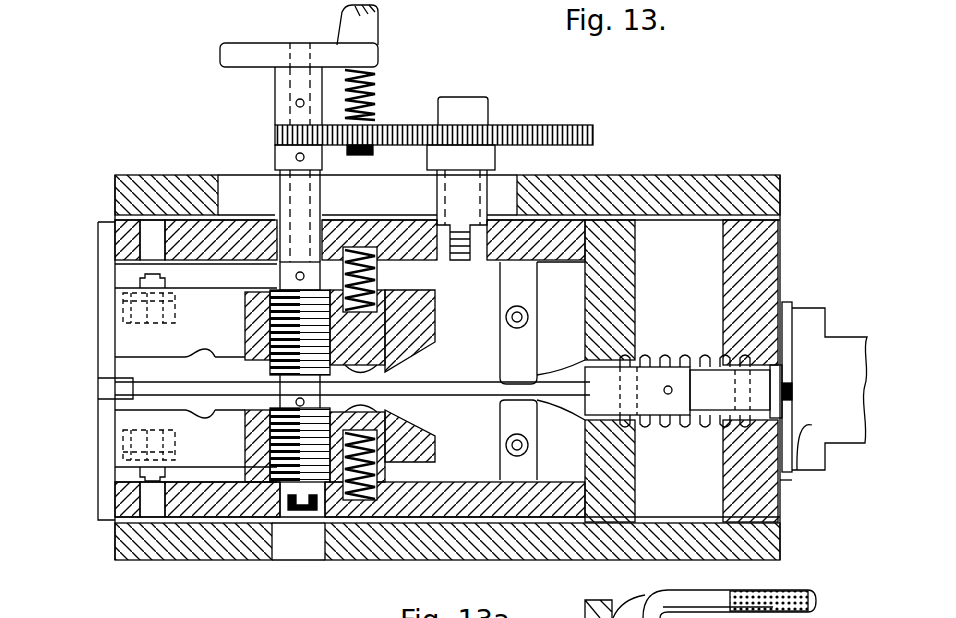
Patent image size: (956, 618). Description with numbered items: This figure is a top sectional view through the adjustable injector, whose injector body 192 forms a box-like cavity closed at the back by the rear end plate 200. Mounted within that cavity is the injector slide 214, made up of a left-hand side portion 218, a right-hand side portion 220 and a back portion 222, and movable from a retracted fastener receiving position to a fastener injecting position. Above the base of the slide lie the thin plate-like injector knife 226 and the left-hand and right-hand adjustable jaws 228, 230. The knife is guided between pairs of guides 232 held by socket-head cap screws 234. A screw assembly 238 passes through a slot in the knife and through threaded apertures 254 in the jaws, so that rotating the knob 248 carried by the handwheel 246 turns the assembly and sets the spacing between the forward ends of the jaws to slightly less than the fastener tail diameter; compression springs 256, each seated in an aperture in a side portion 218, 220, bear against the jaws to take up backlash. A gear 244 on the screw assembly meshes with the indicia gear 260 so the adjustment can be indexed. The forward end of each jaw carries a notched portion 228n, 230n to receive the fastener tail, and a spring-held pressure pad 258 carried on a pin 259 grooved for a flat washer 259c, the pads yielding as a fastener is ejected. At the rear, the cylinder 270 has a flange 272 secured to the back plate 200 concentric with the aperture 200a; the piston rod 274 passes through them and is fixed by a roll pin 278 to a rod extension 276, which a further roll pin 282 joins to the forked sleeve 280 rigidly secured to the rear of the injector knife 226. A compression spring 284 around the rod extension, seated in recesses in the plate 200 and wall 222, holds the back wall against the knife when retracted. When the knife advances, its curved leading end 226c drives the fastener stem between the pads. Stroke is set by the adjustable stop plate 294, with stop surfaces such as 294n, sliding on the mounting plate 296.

In FIG. 13, the injector body 192 is at (126, 576).
In FIG. 13, the rear end plate 200 is at (780, 258).
In FIG. 13, the aperture 200a is at (792, 478).
In FIG. 13, the injector slide 214 is at (678, 245).
In FIG. 13, the left-hand side portion 218 is at (568, 192).
In FIG. 13, the right-hand side portion 220 is at (411, 520).
In FIG. 13, the back portion 222 is at (625, 275).
In FIG. 13, the injector knife 226 is at (480, 394).
In FIG. 13, the curved leading end 226c is at (236, 392).
In FIG. 13, the left-hand adjustable jaw 228 is at (237, 292).
In FIG. 13, the notched portion 228n is at (193, 355).
In FIG. 13, the right-hand adjustable jaw 230 is at (118, 440).
In FIG. 13, the notched portion 230n is at (172, 416).
In FIG. 13, the guides 232 is at (418, 350).
In FIG. 13, the socket-head cap screws 234 is at (505, 316).
In FIG. 13, the screw assembly 238 is at (296, 560).
In FIG. 13, the gear 244 is at (275, 133).
In FIG. 13, the handwheel 246 is at (378, 55).
In FIG. 13, the knob 248 is at (383, 18).
In FIG. 13, the threaded apertures 254 is at (245, 320).
In FIG. 13, the compression springs 256 is at (380, 274).
In FIG. 13, the pressure pad 258 is at (105, 391).
In FIG. 13, the pin 259 is at (125, 298).
In FIG. 13, the flat washer 259c is at (140, 281).
In FIG. 13, the indicia gear 260 is at (595, 135).
In FIG. 13, the cylinder 270 is at (846, 337).
In FIG. 13, the flange 272 is at (790, 302).
In FIG. 13, the piston rod 274 is at (792, 392).
In FIG. 13, the rod extension 276 is at (706, 356).
In FIG. 13, the roll pin 278 is at (743, 429).
In FIG. 13, the forked sleeve 280 is at (592, 415).
In FIG. 13, the roll pin 282 is at (668, 386).
In FIG. 13, the compression spring 284 is at (645, 430).
In FIG. 13a, the adjustable stop plate 294 is at (625, 594).
In FIG. 13a, the stop surface 294n is at (638, 600).
In FIG. 13a, the mounting plate 296 is at (586, 612).